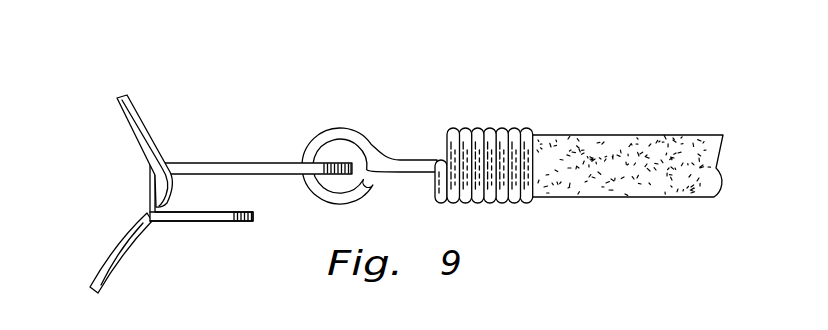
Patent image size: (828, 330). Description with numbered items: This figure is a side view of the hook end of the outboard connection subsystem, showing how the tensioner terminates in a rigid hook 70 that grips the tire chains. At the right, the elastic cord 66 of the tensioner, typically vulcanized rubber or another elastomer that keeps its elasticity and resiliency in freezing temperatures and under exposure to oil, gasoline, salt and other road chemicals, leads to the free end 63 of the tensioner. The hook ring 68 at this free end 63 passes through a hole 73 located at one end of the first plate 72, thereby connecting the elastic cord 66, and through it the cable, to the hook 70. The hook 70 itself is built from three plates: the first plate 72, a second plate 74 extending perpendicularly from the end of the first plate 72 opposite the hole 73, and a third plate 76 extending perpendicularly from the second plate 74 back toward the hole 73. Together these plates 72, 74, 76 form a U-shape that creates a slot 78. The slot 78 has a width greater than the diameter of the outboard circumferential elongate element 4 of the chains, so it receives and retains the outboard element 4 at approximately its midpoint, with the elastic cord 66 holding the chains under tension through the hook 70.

The outboard circumferential elongate element 4 is at (117, 238).
The free end 63 is at (318, 198).
The elastic cord 66 is at (560, 135).
The hook ring 68 is at (475, 127).
The hook 70 is at (316, 62).
The first plate 72 is at (232, 175).
The hole 73 is at (300, 174).
The second plate 74 is at (148, 190).
The third plate 76 is at (212, 223).
The slot 78 is at (256, 141).